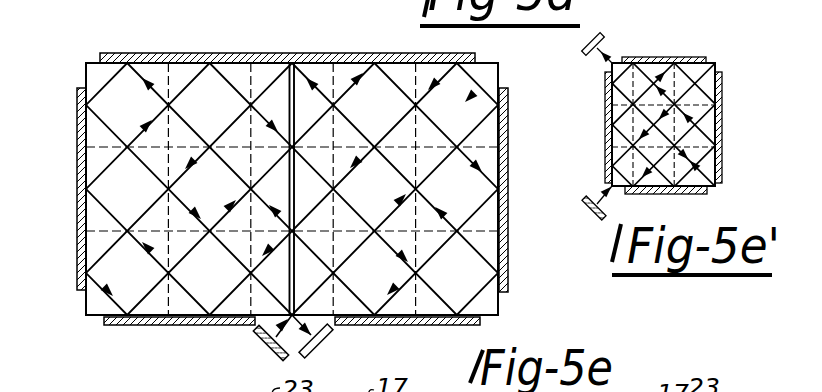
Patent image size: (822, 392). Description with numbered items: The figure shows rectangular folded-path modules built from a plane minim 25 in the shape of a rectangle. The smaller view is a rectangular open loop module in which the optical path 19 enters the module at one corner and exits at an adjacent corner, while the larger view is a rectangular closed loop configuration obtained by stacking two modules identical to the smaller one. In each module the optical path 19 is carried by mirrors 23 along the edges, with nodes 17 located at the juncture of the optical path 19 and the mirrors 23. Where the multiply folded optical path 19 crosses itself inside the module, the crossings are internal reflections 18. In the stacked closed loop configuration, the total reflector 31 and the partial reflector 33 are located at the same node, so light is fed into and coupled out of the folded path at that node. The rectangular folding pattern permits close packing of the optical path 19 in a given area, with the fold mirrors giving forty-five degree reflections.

In FIG. 5E, the nodes 17 is at (293, 62).
In FIG. 5E', the nodes 17 is at (656, 60).
In FIG. 5E, the internal reflections 18 is at (120, 172).
In FIG. 5E', the internal reflections 18 is at (703, 160).
In FIG. 5E, the optical path 19 is at (448, 274).
In FIG. 5E', the optical path 19 is at (716, 187).
In FIG. 5E, the mirrors 23 is at (197, 53).
In FIG. 5E', the mirrors 23 is at (714, 28).
In FIG. 5E, the plane minim 25 is at (466, 100).
In FIG. 5E, the total reflector 31 is at (258, 348).
In FIG. 5E', the total reflector 31 is at (590, 196).
In FIG. 5E, the partial reflector 33 is at (326, 338).
In FIG. 5E', the partial reflector 33 is at (596, 37).